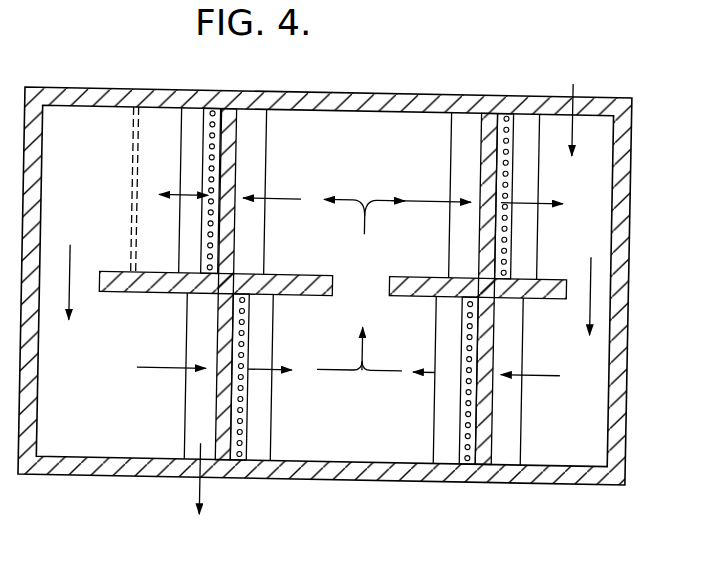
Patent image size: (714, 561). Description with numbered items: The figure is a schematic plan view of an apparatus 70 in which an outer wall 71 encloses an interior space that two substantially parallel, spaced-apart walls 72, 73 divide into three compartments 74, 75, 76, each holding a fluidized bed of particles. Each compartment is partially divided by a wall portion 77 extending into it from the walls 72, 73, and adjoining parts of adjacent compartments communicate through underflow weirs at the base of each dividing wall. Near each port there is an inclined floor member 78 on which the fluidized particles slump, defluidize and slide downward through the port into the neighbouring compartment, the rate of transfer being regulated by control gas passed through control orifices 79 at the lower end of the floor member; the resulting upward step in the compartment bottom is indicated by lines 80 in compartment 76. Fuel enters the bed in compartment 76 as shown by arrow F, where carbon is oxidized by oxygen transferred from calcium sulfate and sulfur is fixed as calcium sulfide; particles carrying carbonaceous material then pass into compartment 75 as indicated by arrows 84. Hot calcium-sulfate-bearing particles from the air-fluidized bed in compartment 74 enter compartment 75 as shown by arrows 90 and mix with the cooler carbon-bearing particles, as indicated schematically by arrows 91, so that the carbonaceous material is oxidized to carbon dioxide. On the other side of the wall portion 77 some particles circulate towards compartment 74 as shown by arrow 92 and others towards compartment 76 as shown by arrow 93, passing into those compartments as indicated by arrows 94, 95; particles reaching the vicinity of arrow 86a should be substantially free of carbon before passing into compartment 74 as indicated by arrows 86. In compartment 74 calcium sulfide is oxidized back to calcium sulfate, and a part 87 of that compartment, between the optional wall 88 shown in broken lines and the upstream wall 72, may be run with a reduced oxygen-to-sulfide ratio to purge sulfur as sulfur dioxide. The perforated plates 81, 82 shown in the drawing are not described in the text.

The apparatus 70 is at (141, 490).
The outer wall 71 is at (628, 408).
The dividing wall 72 is at (257, 150).
The dividing wall 73 is at (486, 150).
The compartment 74 is at (69, 225).
The compartment 75 is at (352, 164).
The compartment 76 is at (576, 228).
The wall portion 77 is at (312, 270).
The inclined floor member 78 is at (203, 126).
The control orifices 79 is at (211, 195).
The lines indicating step 80 is at (183, 127).
The upper left perforated plate 81 is at (200, 138).
The upper right perforated plate 82 is at (513, 235).
The arrows 84 is at (545, 365).
The arrows 86 is at (190, 196).
The arrow 86a is at (287, 194).
The part of compartment 87 is at (147, 174).
The optional wall 88 is at (134, 224).
The arrows 90 is at (157, 365).
The arrows 91 is at (337, 364).
The arrow 92 is at (344, 225).
The arrow 93 is at (384, 225).
The arrow 94 is at (432, 194).
The arrow 95 is at (530, 198).
The fuel feed arrow F is at (575, 78).